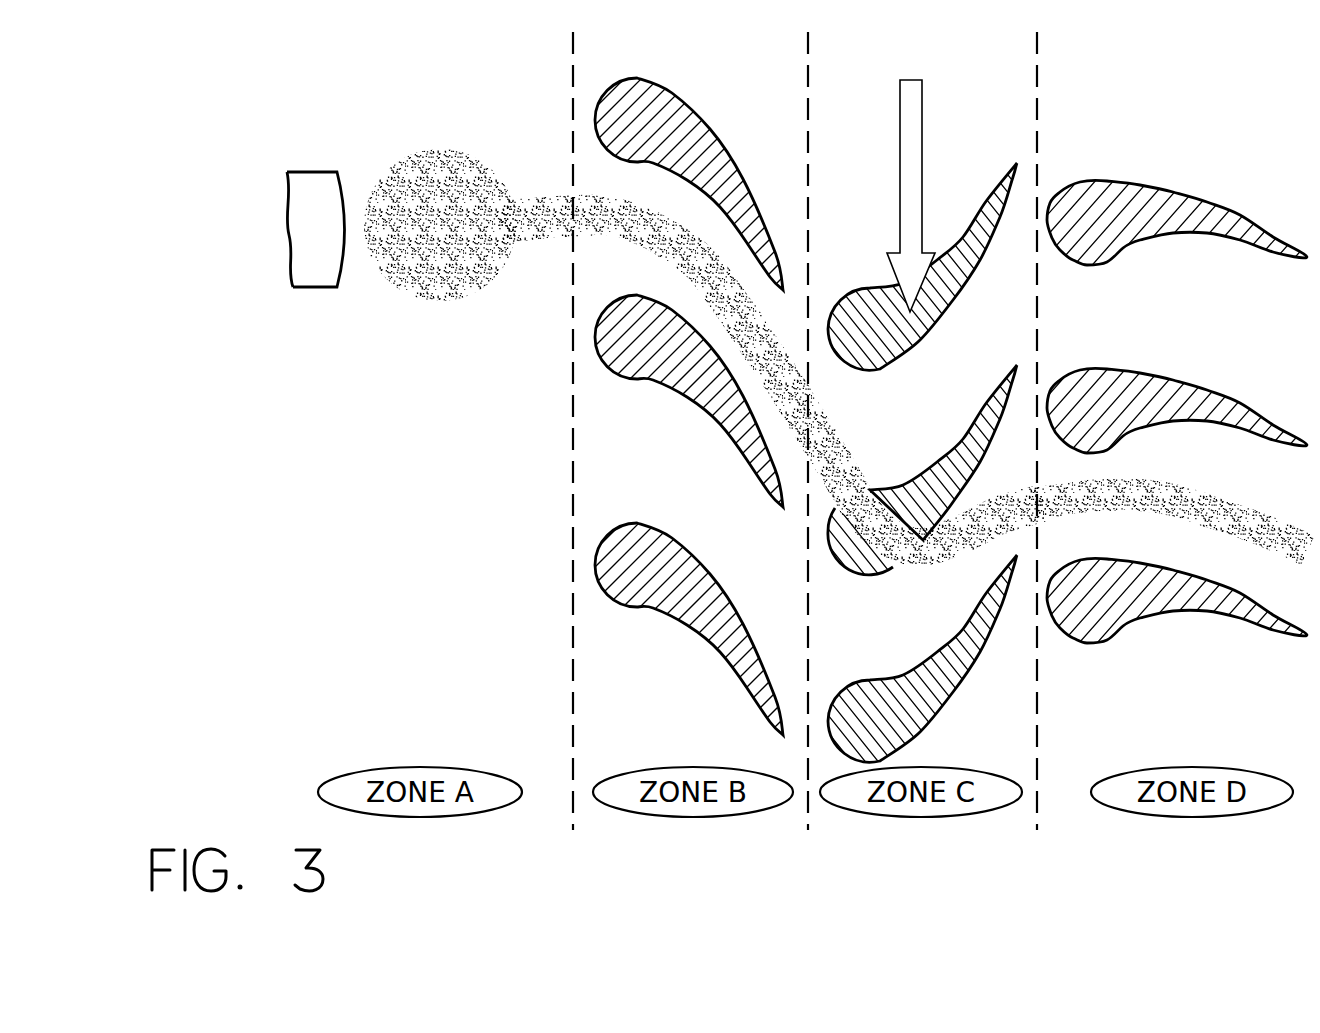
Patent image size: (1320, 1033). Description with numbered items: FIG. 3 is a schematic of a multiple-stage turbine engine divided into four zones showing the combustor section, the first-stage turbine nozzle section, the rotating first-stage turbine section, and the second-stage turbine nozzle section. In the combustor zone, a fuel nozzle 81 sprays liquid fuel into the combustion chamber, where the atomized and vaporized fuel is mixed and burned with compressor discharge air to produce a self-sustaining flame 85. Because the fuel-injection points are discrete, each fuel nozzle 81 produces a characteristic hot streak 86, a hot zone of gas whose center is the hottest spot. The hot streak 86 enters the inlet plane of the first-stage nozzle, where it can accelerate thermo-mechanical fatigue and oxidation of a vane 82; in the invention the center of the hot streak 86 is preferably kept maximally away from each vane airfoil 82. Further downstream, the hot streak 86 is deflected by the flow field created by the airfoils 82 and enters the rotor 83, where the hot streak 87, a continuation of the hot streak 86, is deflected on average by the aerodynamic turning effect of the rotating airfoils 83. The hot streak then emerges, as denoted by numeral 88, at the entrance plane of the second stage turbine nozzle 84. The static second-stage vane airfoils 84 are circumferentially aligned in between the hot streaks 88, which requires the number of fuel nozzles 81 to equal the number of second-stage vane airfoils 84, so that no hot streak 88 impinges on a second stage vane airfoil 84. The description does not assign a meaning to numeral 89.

The fuel nozzle 81 is at (318, 168).
The first-stage turbine vane airfoil 82 is at (650, 77).
The rotor 83 is at (922, 160).
The second-stage turbine vane airfoil 84 is at (1125, 180).
The self-sustaining flame 85 is at (432, 155).
The hot streak 86 is at (602, 252).
The hot streak in rotor zone 87 is at (935, 568).
The hot streak at second-stage nozzle entrance 88 is at (1093, 523).
The eroded rotor blade 89 is at (922, 468).